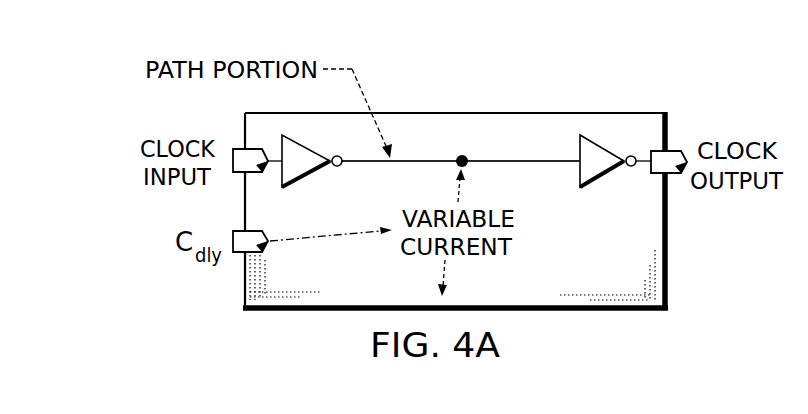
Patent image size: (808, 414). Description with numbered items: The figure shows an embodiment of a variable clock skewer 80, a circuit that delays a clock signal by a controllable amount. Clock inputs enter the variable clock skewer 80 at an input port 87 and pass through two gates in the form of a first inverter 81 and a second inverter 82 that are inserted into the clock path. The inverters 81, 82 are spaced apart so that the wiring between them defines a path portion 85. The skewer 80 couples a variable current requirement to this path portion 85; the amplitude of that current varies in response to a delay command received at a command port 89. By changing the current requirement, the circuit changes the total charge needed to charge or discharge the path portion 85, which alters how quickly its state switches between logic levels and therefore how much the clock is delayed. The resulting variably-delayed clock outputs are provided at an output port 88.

The variable clock skewer 80 is at (553, 104).
The inverter 81 is at (312, 168).
The inverter 82 is at (609, 168).
The path portion 85 is at (523, 165).
The input port 87 is at (238, 148).
The output port 88 is at (672, 176).
The command port 89 is at (240, 257).